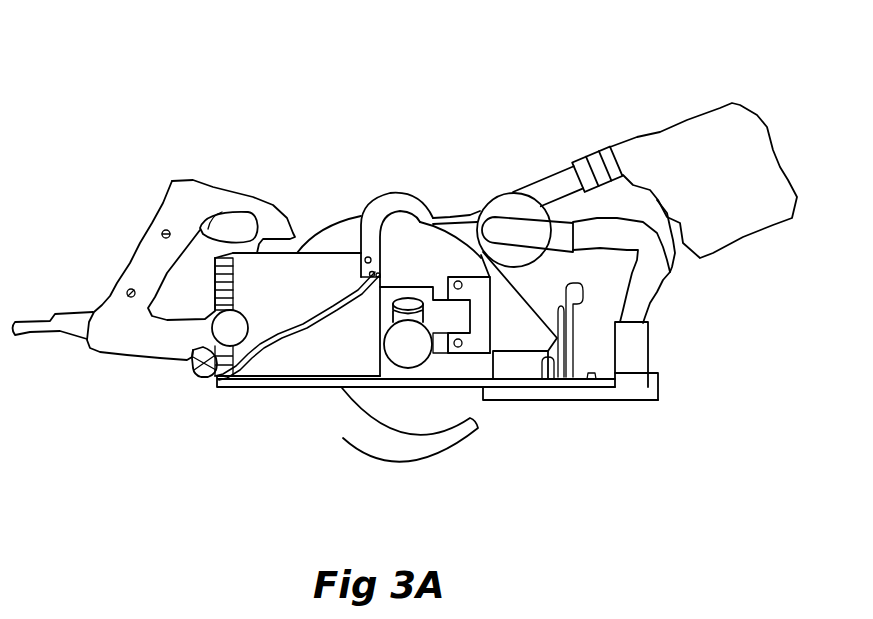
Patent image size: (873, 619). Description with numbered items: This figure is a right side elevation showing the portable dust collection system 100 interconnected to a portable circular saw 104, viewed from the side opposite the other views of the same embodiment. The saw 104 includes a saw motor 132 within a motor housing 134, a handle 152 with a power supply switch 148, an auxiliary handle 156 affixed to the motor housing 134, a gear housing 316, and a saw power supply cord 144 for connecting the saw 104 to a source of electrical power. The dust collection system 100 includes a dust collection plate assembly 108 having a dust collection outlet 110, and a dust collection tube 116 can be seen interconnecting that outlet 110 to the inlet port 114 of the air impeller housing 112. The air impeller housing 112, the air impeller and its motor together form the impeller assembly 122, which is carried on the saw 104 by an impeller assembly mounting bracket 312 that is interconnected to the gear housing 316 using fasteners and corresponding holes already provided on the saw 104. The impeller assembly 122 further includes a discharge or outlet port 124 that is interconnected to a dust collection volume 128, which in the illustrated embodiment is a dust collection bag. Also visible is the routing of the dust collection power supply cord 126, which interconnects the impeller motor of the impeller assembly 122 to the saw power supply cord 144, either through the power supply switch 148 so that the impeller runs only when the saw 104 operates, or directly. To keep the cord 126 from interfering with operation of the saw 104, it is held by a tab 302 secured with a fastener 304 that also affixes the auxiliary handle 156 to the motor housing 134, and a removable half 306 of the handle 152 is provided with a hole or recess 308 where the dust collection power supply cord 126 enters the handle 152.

The portable dust collection system 100 is at (508, 104).
The portable circular saw 104 is at (307, 210).
The dust collection plate assembly 108 is at (637, 400).
The dust collection outlet 110 is at (650, 350).
The air impeller housing 112 is at (472, 207).
The inlet port 114 is at (522, 232).
The dust collection tube 116 is at (672, 273).
The impeller assembly 122 is at (497, 188).
The discharge or outlet port 124 is at (563, 167).
The dust collection power supply cord 126 is at (288, 352).
The dust collection volume 128 is at (760, 117).
The saw motor 132 is at (220, 348).
The motor housing 134 is at (320, 357).
The saw power supply cord 144 is at (32, 315).
The power supply switch 148 is at (250, 212).
The handle 152 is at (167, 209).
The auxiliary handle 156 is at (388, 195).
The tab 302 is at (370, 278).
The fastener 304 is at (363, 272).
The removable half of the handle 306 is at (143, 238).
The hole or recess 308 is at (192, 362).
The impeller assembly mounting bracket 312 is at (468, 353).
The gear housing 316 is at (433, 373).